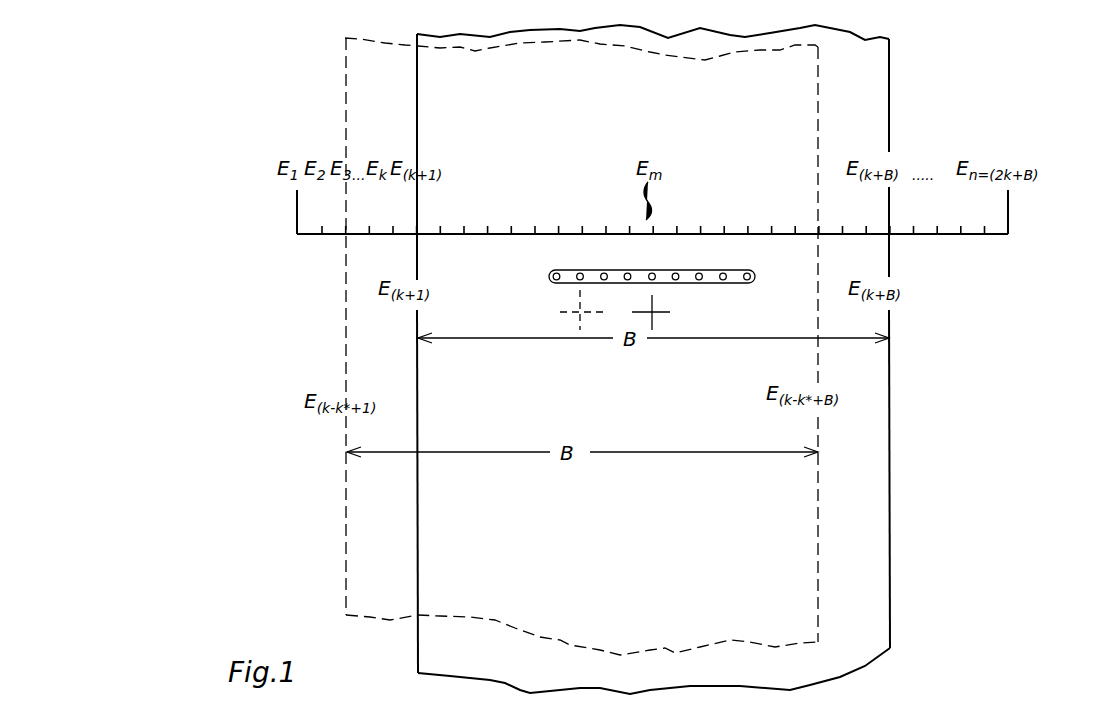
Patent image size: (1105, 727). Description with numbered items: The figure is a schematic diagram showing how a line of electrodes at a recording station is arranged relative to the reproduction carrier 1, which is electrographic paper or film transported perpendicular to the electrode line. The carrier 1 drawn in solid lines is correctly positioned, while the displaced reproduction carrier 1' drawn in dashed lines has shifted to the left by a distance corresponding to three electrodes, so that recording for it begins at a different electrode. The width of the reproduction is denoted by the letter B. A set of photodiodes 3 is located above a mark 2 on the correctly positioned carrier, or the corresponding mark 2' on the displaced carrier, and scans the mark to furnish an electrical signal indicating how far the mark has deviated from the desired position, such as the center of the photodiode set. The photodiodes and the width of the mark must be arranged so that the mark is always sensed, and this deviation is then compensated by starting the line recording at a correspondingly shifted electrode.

The reproduction carrier 1 is at (652, 359).
The displaced reproduction carrier 1' is at (559, 346).
The mark 2 is at (665, 312).
The mark 2' is at (565, 310).
The set of photodiodes 3 is at (755, 277).